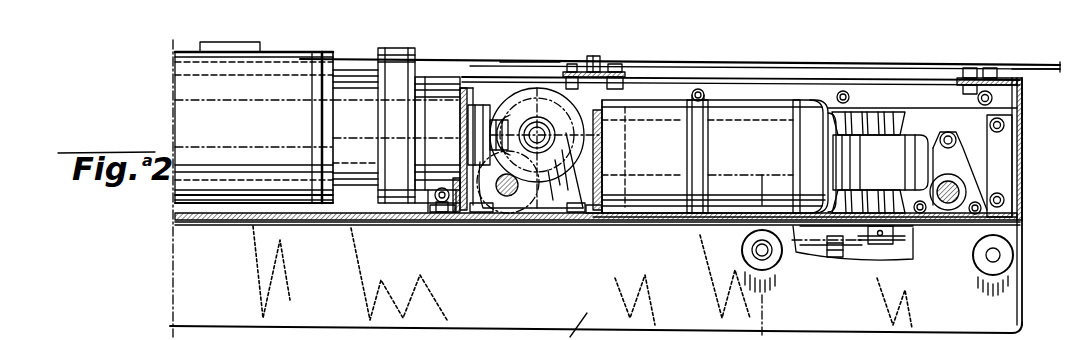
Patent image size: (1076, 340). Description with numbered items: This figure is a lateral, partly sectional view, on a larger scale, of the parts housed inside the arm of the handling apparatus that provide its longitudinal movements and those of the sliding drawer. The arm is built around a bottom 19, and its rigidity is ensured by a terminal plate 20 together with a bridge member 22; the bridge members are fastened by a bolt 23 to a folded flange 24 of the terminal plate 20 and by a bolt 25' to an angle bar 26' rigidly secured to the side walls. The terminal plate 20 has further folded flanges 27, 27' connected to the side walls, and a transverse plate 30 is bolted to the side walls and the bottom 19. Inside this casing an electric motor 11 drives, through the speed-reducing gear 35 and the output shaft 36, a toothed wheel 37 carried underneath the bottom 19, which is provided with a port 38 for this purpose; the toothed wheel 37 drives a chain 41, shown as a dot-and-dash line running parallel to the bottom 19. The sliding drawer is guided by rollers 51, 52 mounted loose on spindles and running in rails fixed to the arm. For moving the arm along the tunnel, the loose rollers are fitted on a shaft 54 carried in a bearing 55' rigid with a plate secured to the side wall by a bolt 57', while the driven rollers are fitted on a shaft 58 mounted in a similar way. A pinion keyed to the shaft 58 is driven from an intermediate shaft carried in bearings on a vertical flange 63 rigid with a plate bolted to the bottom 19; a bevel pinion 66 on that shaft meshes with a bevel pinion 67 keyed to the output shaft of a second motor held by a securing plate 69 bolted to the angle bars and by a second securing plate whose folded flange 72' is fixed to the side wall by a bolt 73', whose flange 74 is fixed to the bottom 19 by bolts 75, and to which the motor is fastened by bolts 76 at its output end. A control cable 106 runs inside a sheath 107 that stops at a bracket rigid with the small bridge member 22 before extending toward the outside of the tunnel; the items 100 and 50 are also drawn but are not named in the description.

The securing plate 69 is at (178, 55).
The bolts 76 is at (466, 80).
The bevel pinion 67 is at (497, 105).
The sheath 107 is at (517, 68).
The bolt 25' is at (588, 68).
The pin 100 is at (594, 63).
The bridge member 22 is at (620, 60).
The cable 106 is at (696, 66).
The angle bar 26' is at (878, 132).
The speed-reducing gear 35 is at (873, 153).
The bolt 57' is at (992, 168).
The folded flange 27 is at (991, 76).
The bolt 23 is at (1005, 77).
The folded flange 24 is at (1022, 82).
The terminal plate 20 is at (1022, 105).
The folded flange 27' is at (1027, 125).
The bearing 55' is at (997, 187).
The roller 52 is at (1013, 256).
The frame 50 is at (1024, 297).
The bolt 73' is at (414, 230).
The bolts 75 is at (440, 213).
The flange 74 is at (447, 214).
The folded flange 72' is at (475, 224).
The shaft 58 is at (513, 214).
The vertical flange 63 is at (543, 205).
The bevel pinion 66 is at (582, 214).
The transverse plate 30 is at (605, 215).
The bottom 19 is at (662, 226).
The roller 51 is at (748, 249).
The chain 41 is at (823, 242).
The toothed wheel 37 is at (861, 245).
The output shaft 36 is at (876, 247).
The port 38 is at (920, 227).
The shaft 54 is at (955, 206).
The electric motor 11 is at (715, 156).